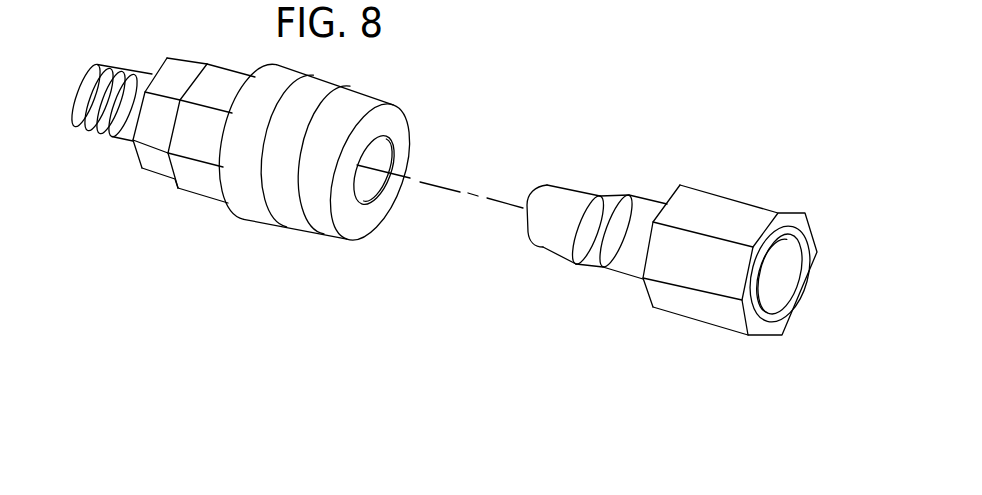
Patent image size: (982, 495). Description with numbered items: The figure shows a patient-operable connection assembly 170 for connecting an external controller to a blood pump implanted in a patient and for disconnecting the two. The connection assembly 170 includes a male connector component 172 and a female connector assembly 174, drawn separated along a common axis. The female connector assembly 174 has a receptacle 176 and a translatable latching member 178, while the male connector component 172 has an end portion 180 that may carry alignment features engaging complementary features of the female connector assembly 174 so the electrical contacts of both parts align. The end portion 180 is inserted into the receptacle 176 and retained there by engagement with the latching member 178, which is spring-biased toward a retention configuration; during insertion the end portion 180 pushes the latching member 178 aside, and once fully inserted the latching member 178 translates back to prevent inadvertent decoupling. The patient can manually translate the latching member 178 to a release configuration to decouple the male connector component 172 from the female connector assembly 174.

The patient-operable connection assembly 170 is at (536, 90).
The male connector component 172 is at (605, 337).
The female connector assembly 174 is at (122, 213).
The receptacle 176 is at (393, 208).
The translatable latching member 178 is at (278, 212).
The end portion 180 is at (673, 177).